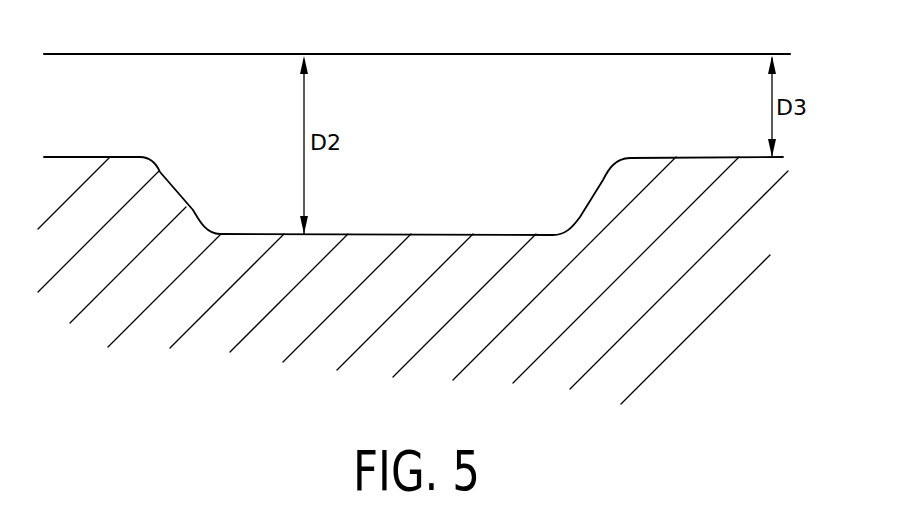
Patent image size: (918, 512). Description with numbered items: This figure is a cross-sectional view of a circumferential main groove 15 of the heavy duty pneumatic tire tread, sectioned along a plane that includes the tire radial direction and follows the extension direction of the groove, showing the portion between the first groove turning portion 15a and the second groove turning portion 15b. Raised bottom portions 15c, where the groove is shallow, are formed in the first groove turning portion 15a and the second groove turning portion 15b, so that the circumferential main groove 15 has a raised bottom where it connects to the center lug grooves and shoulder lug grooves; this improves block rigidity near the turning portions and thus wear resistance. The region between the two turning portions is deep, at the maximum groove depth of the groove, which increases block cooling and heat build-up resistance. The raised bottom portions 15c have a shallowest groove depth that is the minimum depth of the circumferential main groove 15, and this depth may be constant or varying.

The circumferential main groove 15 is at (417, 51).
The first groove turning portion 15a is at (706, 91).
The second groove turning portion 15b is at (108, 89).
The raised bottom portion 15c is at (83, 157).